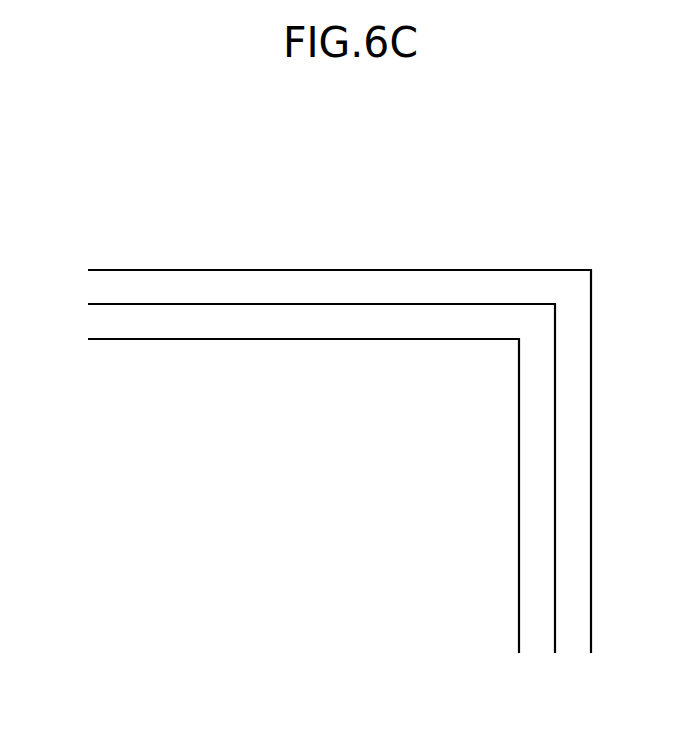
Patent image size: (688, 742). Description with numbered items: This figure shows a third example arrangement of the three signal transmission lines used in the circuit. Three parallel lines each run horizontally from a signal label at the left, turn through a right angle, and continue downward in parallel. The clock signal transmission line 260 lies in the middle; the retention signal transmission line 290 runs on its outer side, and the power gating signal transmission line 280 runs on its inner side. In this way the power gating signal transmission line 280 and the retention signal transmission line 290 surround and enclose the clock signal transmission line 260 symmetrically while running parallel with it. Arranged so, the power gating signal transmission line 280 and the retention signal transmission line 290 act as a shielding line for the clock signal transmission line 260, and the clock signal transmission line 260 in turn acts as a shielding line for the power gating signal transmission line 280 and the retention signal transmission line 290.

The clock signal transmission line 260 is at (243, 298).
The power gating signal transmission line 280 is at (327, 345).
The retention signal transmission line 290 is at (327, 262).